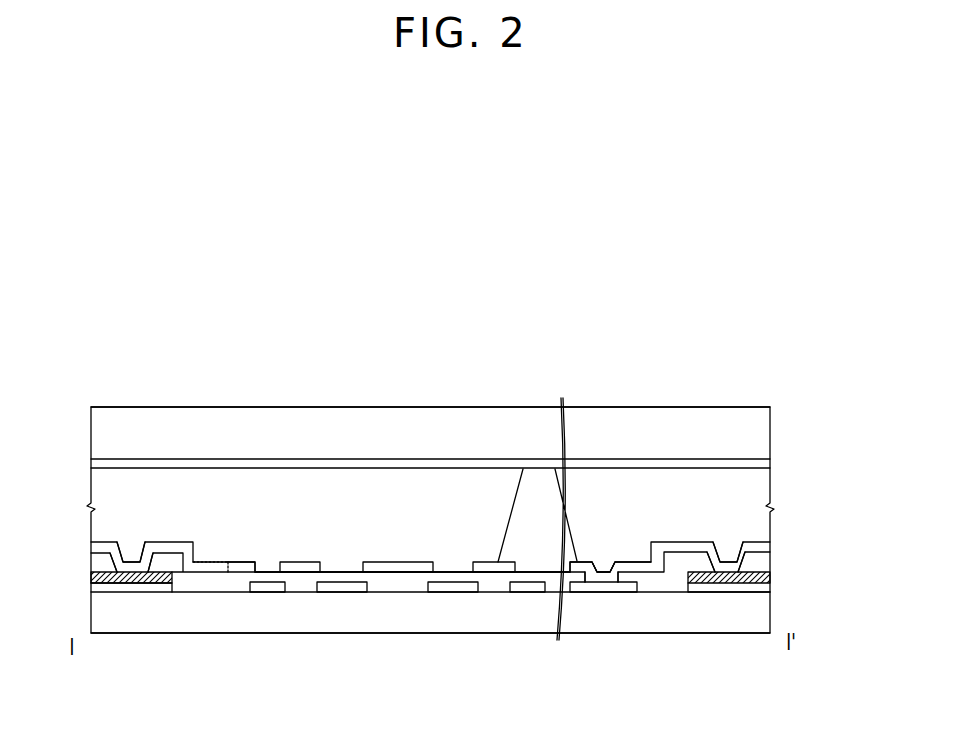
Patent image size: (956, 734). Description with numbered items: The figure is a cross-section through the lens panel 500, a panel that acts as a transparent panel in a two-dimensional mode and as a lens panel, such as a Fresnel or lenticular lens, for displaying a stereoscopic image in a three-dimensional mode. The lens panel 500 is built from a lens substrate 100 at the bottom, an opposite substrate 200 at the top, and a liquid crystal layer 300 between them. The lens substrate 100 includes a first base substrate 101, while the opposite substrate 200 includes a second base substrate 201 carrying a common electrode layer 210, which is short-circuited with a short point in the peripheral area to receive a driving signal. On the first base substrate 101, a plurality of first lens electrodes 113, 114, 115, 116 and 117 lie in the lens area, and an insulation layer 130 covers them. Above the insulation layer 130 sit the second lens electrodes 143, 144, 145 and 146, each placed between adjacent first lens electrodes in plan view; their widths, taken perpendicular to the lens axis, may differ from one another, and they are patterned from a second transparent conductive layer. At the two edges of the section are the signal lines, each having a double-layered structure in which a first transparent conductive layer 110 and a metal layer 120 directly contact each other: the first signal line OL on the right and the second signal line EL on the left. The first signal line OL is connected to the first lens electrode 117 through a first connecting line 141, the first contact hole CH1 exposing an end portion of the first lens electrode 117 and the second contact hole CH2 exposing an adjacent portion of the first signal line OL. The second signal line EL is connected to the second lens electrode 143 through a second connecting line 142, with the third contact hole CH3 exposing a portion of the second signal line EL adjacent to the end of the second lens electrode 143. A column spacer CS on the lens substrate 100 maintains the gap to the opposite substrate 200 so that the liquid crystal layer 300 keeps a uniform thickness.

The lens panel 500 is at (443, 212).
The opposite substrate 200 is at (786, 410).
The second base substrate 201 is at (90, 433).
The common electrode layer 210 is at (90, 461).
The liquid crystal layer 300 is at (786, 472).
The lens substrate 100 is at (786, 543).
The first base substrate 101 is at (90, 611).
The first transparent conductive layer 110 is at (118, 592).
The metal layer 120 is at (158, 583).
The second signal line EL is at (180, 676).
The first signal line OL is at (777, 676).
The first lens electrode 113 is at (266, 592).
The first lens electrode 114 is at (340, 592).
The first lens electrode 115 is at (453, 592).
The first lens electrode 116 is at (523, 593).
The first lens electrode 117 is at (605, 592).
The insulation layer 130 is at (400, 574).
The first connecting line 141 is at (674, 553).
The second connecting line 142 is at (210, 567).
The second lens electrode 143 is at (242, 563).
The second lens electrode 144 is at (302, 563).
The second lens electrode 145 is at (401, 563).
The second lens electrode 146 is at (487, 562).
The first contact hole CH1 is at (600, 569).
The second contact hole CH2 is at (724, 557).
The third contact hole CH3 is at (128, 555).
The column spacer CS is at (533, 483).